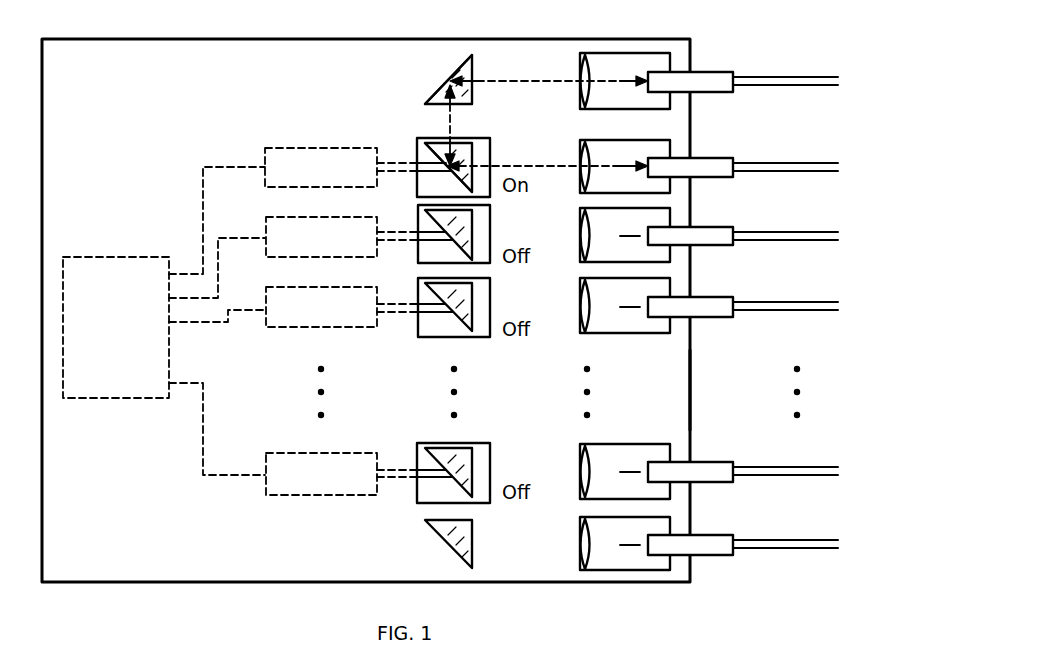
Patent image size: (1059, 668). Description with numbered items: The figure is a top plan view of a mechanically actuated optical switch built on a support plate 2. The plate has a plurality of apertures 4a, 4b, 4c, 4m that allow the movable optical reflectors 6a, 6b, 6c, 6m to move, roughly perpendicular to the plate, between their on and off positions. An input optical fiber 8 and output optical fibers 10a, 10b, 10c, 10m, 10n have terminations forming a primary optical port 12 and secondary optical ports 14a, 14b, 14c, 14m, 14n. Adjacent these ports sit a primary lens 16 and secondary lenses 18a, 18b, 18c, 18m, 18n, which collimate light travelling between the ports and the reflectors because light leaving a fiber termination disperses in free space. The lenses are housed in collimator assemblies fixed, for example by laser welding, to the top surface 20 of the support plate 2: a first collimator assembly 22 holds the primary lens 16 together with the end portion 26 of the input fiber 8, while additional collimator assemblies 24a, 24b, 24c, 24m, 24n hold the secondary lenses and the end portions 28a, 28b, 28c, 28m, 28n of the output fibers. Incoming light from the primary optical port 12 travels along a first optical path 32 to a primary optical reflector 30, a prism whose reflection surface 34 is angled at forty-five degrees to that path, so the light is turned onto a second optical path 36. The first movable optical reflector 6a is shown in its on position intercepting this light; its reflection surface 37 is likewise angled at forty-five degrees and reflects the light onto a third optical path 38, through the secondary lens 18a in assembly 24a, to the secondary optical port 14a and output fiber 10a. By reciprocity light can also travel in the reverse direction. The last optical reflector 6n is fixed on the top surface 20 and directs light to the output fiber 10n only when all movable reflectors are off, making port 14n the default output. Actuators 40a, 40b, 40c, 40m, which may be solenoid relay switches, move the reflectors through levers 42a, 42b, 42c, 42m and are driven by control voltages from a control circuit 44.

The support plate 2 is at (187, 42).
The aperture 4a is at (491, 148).
The aperture 4b is at (491, 223).
The aperture 4c is at (491, 297).
The aperture 4m is at (476, 454).
The first movable optical reflector 6a is at (466, 148).
The movable optical reflector 6b is at (477, 250).
The movable optical reflector 6c is at (458, 332).
The movable optical reflector 6m is at (474, 472).
The last optical reflector 6n is at (474, 533).
The input optical fiber 8 is at (780, 80).
The output optical fiber 10a is at (770, 170).
The output optical fiber 10b is at (770, 234).
The output optical fiber 10c is at (770, 304).
The output optical fiber 10m is at (785, 474).
The output optical fiber 10n is at (778, 543).
The primary optical port 12 is at (638, 87).
The secondary optical port 14a is at (645, 170).
The secondary optical port 14b is at (642, 237).
The secondary optical port 14c is at (642, 307).
The secondary optical port 14m is at (642, 473).
The secondary optical port 14n is at (650, 544).
The primary lens 16 is at (574, 78).
The secondary lens 18a is at (579, 160).
The secondary lens 18b is at (578, 246).
The secondary lens 18c is at (578, 320).
The secondary lens 18m is at (578, 480).
The secondary lens 18n is at (576, 545).
The top surface 20 is at (678, 388).
The first collimator assembly 22 is at (617, 58).
The additional collimator assembly 24a is at (620, 150).
The additional collimator assembly 24b is at (673, 206).
The additional collimator assembly 24c is at (673, 276).
The additional collimator assembly 24m is at (673, 441).
The additional collimator assembly 24n is at (648, 574).
The end portion of input optical fiber 26 is at (662, 80).
The end portion of output optical fiber 28a is at (662, 170).
The end portion of output optical fiber 28b is at (662, 238).
The end portion of output optical fiber 28c is at (662, 309).
The end portion of output optical fiber 28m is at (662, 472).
The end portion of output optical fiber 28n is at (662, 545).
The primary optical reflector 30 is at (434, 97).
The first optical path 32 is at (490, 79).
The reflection surface 34 is at (452, 68).
The second optical path 36 is at (446, 128).
The reflection surface 37 is at (424, 152).
The third optical path 38 is at (537, 168).
The actuator 40a is at (314, 151).
The actuator 40b is at (314, 220).
The actuator 40c is at (314, 291).
The actuator 40m is at (312, 455).
The lever 42a is at (391, 163).
The lever 42b is at (391, 233).
The lever 42c is at (391, 307).
The lever 42m is at (391, 479).
The control circuit 44 is at (110, 261).